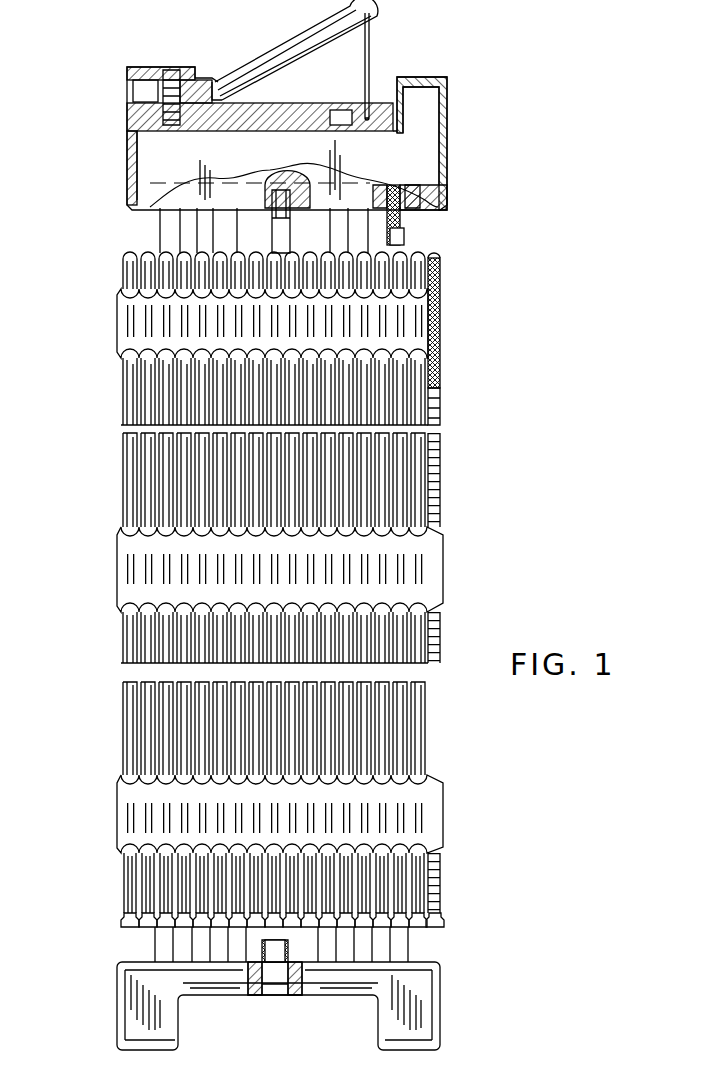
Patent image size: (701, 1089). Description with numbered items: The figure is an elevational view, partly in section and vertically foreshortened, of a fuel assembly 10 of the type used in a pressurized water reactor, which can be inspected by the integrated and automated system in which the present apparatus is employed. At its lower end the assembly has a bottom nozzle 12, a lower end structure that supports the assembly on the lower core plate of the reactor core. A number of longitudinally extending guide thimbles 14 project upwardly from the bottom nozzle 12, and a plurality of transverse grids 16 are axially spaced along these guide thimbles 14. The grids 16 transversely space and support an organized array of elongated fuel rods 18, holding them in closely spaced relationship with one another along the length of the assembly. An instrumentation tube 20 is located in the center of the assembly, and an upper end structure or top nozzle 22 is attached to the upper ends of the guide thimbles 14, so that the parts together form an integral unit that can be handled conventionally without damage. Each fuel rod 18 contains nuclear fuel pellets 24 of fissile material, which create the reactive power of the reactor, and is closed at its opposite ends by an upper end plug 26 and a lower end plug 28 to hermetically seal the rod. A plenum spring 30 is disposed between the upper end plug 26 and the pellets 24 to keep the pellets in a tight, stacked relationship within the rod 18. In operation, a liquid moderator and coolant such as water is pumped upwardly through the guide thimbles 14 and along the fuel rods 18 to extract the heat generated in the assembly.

The fuel assembly 10 is at (510, 198).
The bottom nozzle 12 is at (443, 1011).
The guide thimbles 14 is at (152, 234).
The transverse grids 16 is at (118, 326).
The fuel rods 18 is at (112, 477).
The instrumentation tube 20 is at (272, 975).
The top nozzle 22 is at (450, 150).
The nuclear fuel pellets 24 is at (432, 492).
The upper end plug 26 is at (446, 262).
The lower end plug 28 is at (438, 926).
The plenum spring 30 is at (440, 339).